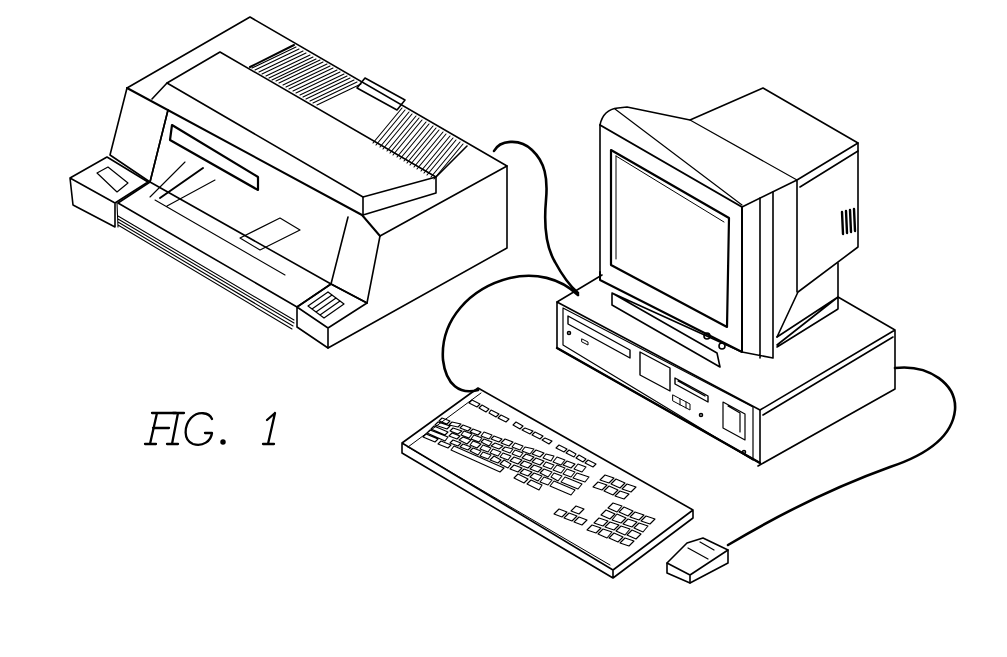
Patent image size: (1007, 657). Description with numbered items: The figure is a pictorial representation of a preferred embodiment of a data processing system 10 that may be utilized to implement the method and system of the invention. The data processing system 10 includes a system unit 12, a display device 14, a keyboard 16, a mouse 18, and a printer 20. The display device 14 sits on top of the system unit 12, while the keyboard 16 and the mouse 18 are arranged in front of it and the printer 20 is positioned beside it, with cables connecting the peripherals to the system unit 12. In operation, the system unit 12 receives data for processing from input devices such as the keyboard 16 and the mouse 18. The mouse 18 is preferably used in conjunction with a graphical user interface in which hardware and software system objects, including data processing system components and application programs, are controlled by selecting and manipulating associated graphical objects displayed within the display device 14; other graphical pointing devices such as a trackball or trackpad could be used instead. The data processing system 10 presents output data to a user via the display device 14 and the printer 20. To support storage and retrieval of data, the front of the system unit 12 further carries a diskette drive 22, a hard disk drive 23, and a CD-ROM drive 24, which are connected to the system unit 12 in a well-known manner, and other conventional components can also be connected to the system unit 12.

The data processing system 10 is at (511, 70).
The system unit 12 is at (872, 314).
The display device 14 is at (802, 106).
The keyboard 16 is at (388, 444).
The mouse 18 is at (673, 577).
The printer 20 is at (184, 306).
The diskette drive 22 is at (687, 390).
The hard disk drive 23 is at (647, 368).
The CD-ROM drive 24 is at (607, 345).